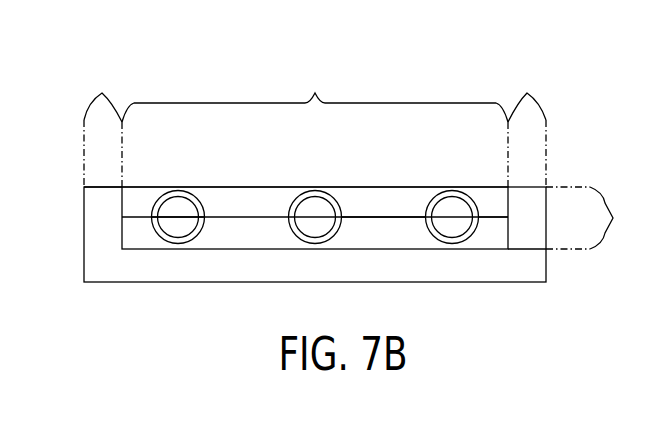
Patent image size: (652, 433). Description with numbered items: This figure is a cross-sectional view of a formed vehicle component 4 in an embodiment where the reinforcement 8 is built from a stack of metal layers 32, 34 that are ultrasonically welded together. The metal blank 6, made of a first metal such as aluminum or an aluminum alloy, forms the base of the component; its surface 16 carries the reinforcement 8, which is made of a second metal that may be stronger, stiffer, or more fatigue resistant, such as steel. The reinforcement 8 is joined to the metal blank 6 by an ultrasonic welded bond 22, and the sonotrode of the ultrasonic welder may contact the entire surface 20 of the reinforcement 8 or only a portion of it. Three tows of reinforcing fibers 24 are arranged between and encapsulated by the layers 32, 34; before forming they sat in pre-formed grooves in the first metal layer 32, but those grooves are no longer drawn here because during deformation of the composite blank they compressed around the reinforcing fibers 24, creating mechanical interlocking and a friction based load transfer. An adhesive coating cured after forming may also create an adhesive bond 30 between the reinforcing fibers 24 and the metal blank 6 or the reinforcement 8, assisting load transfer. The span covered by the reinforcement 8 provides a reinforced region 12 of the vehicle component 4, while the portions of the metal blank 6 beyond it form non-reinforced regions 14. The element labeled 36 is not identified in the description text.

The vehicle component 4 is at (502, 49).
The metal blank 6 is at (108, 267).
The reinforcement 8 is at (589, 218).
The reinforced region 12 is at (315, 94).
The non-reinforced regions 14 is at (315, 94).
The surface of the metal blank 16 is at (106, 183).
The surface of the reinforcement 20 is at (207, 186).
The ultrasonic welded bond 22 is at (232, 252).
The reinforcing fibers 24 is at (313, 213).
The adhesive bond 30 is at (153, 195).
The first metal layer 32 is at (493, 233).
The second metal layer 34 is at (487, 202).
The main channel 36 is at (230, 215).